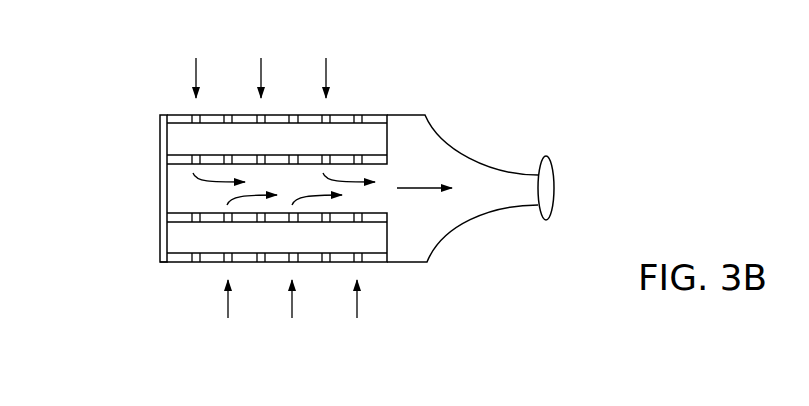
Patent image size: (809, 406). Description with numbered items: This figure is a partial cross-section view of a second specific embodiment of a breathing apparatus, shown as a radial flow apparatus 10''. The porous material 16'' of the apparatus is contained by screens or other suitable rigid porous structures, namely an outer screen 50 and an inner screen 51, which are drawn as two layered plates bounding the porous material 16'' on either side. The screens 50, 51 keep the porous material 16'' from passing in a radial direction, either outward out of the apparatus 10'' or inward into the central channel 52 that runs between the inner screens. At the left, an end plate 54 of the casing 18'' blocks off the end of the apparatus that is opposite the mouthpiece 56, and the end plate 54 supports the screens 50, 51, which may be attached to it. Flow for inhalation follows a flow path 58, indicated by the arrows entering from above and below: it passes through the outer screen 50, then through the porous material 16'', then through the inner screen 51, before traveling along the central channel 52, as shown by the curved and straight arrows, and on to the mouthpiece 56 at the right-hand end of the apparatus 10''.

The radial flow apparatus 10'' is at (354, 195).
The porous material 16'' is at (278, 189).
The casing 18'' is at (133, 294).
The outer screen 50 is at (343, 117).
The inner screen 51 is at (180, 165).
The central channel 52 is at (355, 172).
The end plate 54 is at (158, 202).
The mouthpiece 56 is at (547, 185).
The flow path 58 is at (262, 70).